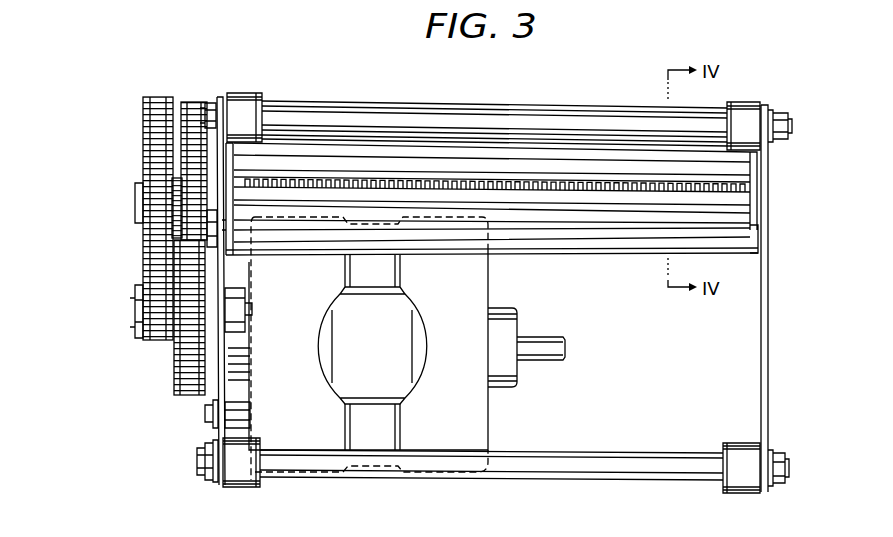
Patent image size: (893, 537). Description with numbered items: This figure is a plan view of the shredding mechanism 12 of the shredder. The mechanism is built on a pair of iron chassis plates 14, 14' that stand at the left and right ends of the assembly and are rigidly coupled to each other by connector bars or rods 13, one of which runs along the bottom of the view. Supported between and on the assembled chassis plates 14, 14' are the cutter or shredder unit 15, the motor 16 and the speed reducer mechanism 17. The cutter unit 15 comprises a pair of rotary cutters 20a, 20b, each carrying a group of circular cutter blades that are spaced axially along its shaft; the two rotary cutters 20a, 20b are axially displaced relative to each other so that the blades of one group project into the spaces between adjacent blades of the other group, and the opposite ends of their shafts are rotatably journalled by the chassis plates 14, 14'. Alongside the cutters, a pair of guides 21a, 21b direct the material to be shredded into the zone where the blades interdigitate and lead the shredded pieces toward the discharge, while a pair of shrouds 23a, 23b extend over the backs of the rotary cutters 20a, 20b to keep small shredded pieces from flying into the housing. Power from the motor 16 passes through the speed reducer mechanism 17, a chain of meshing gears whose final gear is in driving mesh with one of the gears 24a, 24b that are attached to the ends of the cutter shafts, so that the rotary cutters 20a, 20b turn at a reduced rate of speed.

The shredding mechanism 12 is at (775, 298).
The connector bars or rods 13 is at (657, 460).
The chassis plate 14 is at (204, 291).
The chassis plate 14' is at (775, 452).
The cutter or shredder unit 15 is at (449, 170).
The motor 16 is at (478, 421).
The speed reducer mechanism 17 is at (132, 213).
The rotary cutter 20a is at (317, 177).
The rotary cutter 20b is at (373, 177).
The guide 21a is at (597, 176).
The guide 21b is at (598, 230).
The shroud 23a is at (513, 150).
The shroud 23b is at (515, 228).
The gear 24a is at (192, 130).
The gear 24b is at (188, 195).